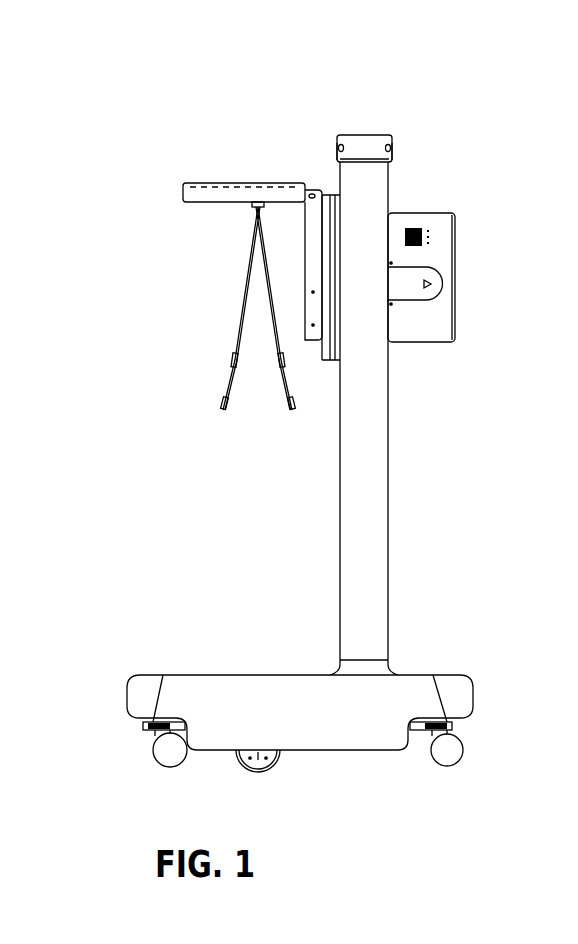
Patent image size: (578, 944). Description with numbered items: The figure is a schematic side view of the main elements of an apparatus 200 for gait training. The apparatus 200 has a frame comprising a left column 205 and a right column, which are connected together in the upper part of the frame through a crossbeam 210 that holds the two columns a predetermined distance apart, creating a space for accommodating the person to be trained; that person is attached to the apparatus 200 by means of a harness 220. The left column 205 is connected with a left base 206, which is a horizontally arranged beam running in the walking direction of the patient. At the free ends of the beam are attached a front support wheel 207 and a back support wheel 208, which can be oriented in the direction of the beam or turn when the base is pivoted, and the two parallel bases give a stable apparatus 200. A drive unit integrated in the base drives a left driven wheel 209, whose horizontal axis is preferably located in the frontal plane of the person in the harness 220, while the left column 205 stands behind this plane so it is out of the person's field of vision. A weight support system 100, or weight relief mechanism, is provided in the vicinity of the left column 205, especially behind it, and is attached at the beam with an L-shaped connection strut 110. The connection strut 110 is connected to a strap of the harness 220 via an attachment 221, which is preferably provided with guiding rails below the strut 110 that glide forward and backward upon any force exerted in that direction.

The weight support system 100 is at (470, 245).
The L-shaped connection strut 110 is at (180, 206).
The apparatus for gait training 200 is at (452, 136).
The left column 205 is at (380, 484).
The left base 206 is at (231, 686).
The front support wheel 207 is at (169, 750).
The back support wheel 208 is at (457, 752).
The left driven wheel 209 is at (258, 761).
The crossbeam 210 is at (362, 147).
The harness 220 is at (240, 313).
The attachment 221 is at (250, 217).